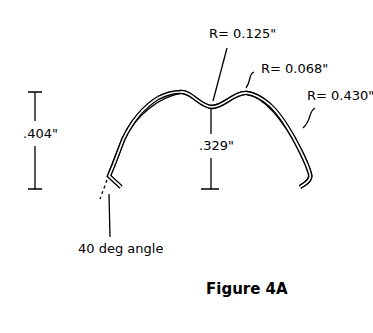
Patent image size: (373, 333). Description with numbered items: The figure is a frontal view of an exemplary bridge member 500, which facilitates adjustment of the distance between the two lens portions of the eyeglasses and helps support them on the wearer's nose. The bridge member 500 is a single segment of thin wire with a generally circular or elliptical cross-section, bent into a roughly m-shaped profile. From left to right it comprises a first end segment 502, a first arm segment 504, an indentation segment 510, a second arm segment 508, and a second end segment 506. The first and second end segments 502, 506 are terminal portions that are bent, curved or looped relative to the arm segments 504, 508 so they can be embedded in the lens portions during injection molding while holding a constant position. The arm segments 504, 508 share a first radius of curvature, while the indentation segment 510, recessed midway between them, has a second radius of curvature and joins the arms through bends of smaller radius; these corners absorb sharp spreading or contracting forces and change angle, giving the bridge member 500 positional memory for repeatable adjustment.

The bridge member 500 is at (196, 106).
The first end segment 502 is at (122, 180).
The first arm segment 504 is at (114, 149).
The second end segment 506 is at (304, 190).
The second arm segment 508 is at (312, 157).
The indentation segment 510 is at (195, 93).